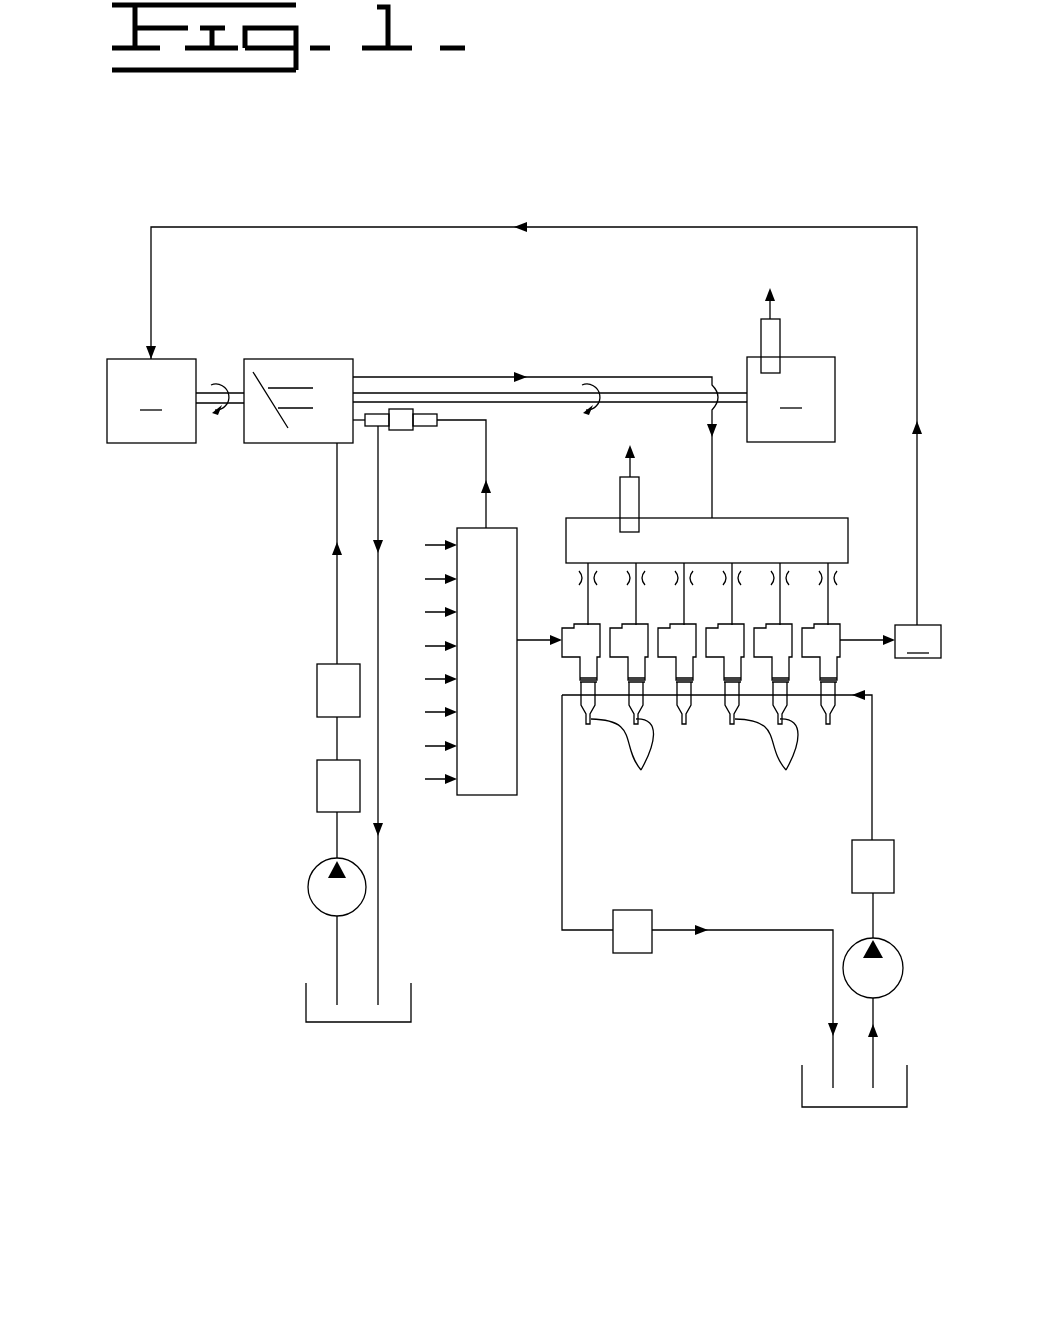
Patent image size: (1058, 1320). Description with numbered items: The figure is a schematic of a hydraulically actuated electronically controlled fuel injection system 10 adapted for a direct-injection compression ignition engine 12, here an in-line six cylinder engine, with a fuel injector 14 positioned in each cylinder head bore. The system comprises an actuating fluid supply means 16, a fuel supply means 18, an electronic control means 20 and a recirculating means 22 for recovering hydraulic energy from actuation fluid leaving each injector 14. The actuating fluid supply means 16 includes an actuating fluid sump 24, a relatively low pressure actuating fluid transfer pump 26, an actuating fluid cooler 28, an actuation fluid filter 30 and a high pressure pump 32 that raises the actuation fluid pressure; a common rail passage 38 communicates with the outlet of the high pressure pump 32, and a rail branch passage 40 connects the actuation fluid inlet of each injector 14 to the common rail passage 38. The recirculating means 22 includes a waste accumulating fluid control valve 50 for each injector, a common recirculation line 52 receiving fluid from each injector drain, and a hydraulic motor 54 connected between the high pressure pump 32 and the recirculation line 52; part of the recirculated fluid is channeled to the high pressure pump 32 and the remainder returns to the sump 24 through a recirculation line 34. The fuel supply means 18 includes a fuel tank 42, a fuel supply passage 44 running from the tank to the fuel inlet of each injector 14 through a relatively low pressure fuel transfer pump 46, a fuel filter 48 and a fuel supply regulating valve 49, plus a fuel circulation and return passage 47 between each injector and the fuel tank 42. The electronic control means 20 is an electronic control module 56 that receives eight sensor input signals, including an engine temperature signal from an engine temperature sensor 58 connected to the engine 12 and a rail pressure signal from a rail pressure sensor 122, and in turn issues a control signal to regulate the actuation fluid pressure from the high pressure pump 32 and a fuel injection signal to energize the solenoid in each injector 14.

The fuel injection system 10 is at (240, 187).
The engine 12 is at (594, 437).
The fuel injector 14 is at (701, 710).
The actuating fluid supply means 16 is at (364, 774).
The fuel supply means 18 is at (820, 1117).
The electronic control means 20 is at (477, 694).
The recirculating means 22 is at (116, 250).
The actuating fluid sump 24 is at (412, 998).
The actuating fluid transfer pump 26 is at (309, 893).
The actuating fluid cooler 28 is at (317, 780).
The actuation fluid filter 30 is at (317, 705).
The high pressure pump 32 is at (300, 443).
The recirculation line 34 is at (381, 902).
The common rail passage 38 is at (607, 518).
The rail branch passage 40 is at (832, 592).
The fuel tank 42 is at (802, 1088).
The fuel supply passage 44 is at (875, 815).
The fuel transfer pump 46 is at (895, 950).
The fuel circulation and return passage 47 is at (833, 1000).
The fuel filter 48 is at (880, 860).
The fuel supply regulating valve 49 is at (628, 953).
The waste accumulating fluid control valve 50 is at (890, 641).
The common recirculation line 52 is at (337, 227).
The hydraulic motor 54 is at (175, 401).
The electronic control module 56 is at (476, 651).
The engine temperature sensor 58 is at (780, 345).
The rail pressure sensor 122 is at (639, 487).